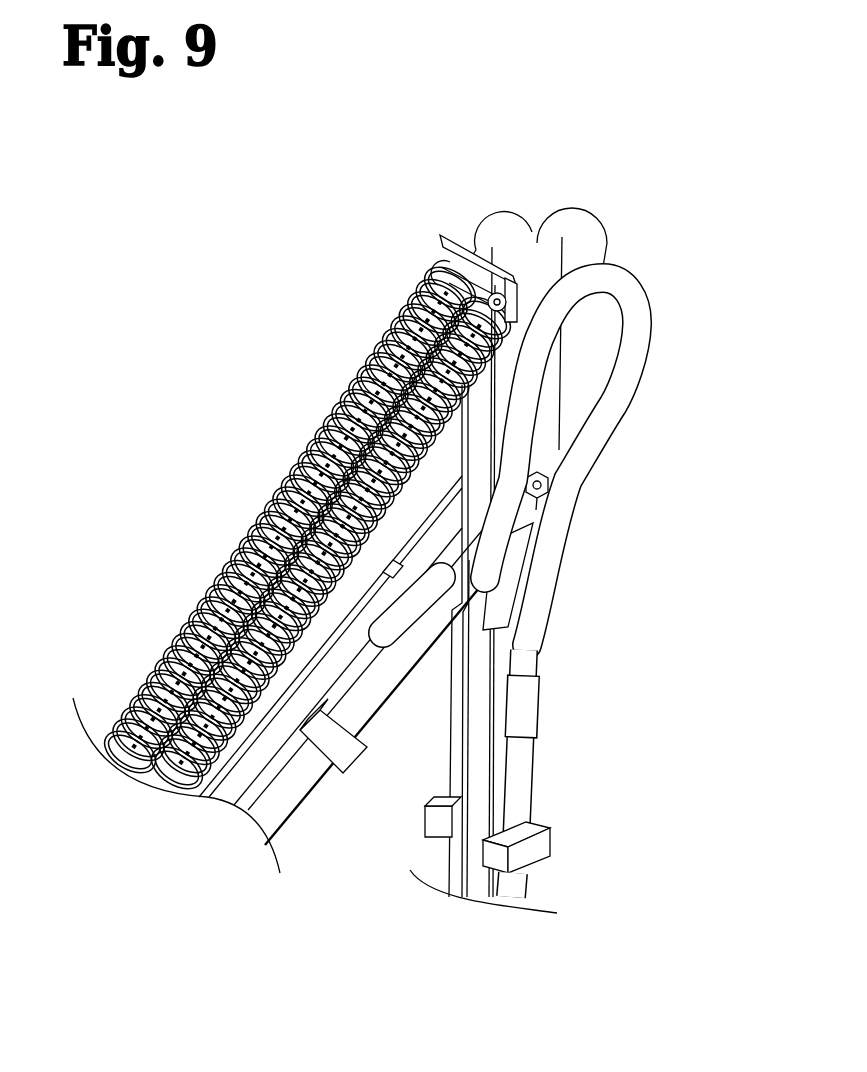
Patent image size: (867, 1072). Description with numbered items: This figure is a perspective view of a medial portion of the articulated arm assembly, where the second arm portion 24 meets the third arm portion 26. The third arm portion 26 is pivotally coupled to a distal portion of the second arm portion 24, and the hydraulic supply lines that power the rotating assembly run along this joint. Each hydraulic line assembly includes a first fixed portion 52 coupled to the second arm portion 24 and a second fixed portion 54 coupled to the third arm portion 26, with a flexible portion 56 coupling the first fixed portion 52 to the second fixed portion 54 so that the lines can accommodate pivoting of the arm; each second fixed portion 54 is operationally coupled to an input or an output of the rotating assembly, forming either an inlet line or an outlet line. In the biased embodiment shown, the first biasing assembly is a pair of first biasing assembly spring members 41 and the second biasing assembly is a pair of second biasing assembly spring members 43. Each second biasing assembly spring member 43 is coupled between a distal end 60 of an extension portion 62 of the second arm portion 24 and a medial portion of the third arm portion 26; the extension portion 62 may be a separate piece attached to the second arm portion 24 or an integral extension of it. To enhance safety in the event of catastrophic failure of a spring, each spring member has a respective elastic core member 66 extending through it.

The second arm portion 24 is at (470, 737).
The third arm portion 26 is at (207, 797).
The first biasing assembly spring member 41 is at (333, 390).
The second biasing assembly spring member 43 is at (230, 545).
The first fixed portion 52 is at (520, 797).
The second fixed portion 54 is at (298, 783).
The flexible portion 56 is at (623, 373).
The distal end 60 is at (545, 266).
The extension portion 62 is at (447, 236).
The elastic core member 66 is at (378, 353).